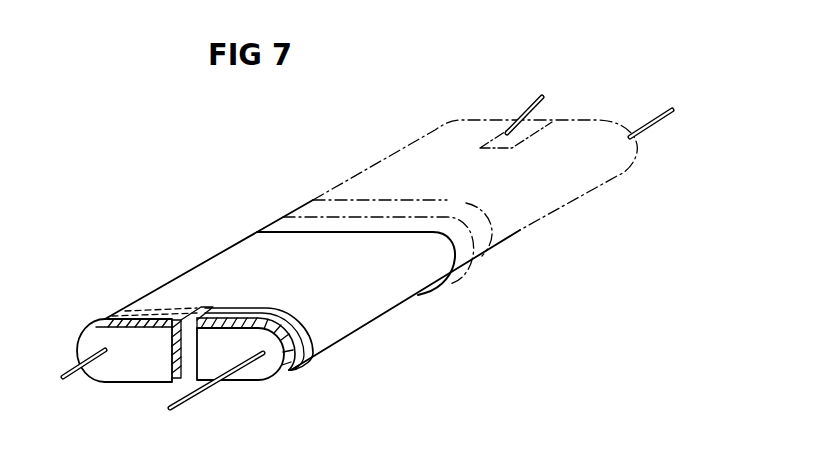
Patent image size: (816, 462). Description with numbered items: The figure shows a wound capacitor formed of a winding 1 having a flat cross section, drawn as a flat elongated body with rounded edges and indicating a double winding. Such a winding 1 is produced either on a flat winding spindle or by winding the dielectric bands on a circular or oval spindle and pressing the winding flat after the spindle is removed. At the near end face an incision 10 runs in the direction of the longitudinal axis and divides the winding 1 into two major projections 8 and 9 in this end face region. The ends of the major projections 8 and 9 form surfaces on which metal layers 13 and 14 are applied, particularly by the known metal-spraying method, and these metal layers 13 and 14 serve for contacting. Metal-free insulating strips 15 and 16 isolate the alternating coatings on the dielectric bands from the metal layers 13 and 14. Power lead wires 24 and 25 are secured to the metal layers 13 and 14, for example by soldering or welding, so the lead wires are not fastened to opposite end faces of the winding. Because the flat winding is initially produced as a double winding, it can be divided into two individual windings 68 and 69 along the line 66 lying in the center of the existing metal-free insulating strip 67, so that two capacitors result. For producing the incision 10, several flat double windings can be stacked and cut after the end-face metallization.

The winding 1 is at (430, 292).
The major projection 8 is at (258, 368).
The major projection 9 is at (123, 362).
The incision 10 is at (188, 358).
The metal layer 13 is at (297, 370).
The metal layer 14 is at (106, 320).
The metal-free insulating strip 15 is at (300, 327).
The metal-free insulating strip 16 is at (173, 301).
The power lead wire 24 is at (201, 392).
The power lead wire 25 is at (85, 378).
The line 66 is at (438, 200).
The metal-free insulating strip 67 is at (449, 217).
The individual winding 68 is at (386, 302).
The individual winding 69 is at (583, 172).